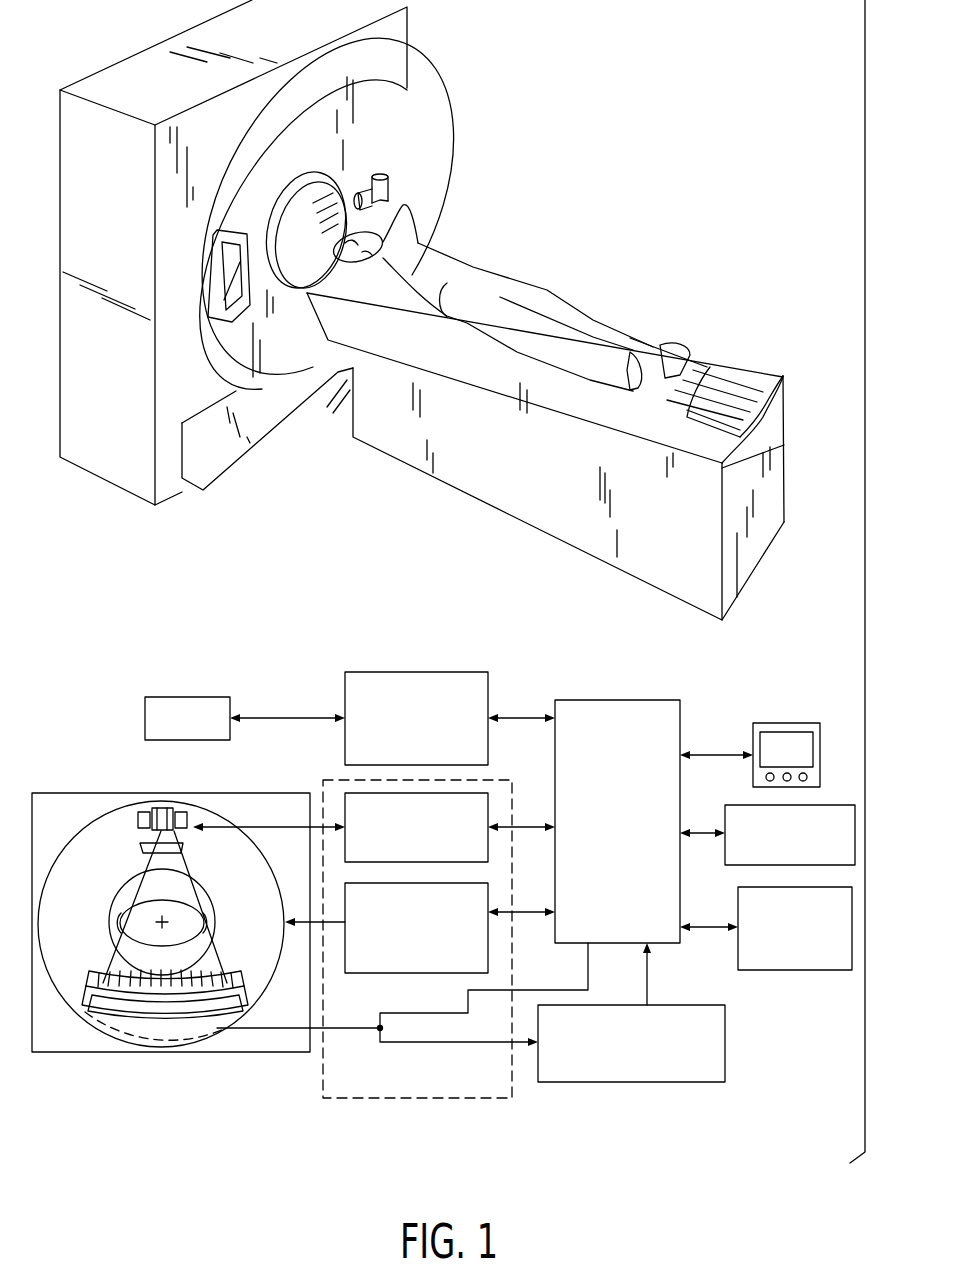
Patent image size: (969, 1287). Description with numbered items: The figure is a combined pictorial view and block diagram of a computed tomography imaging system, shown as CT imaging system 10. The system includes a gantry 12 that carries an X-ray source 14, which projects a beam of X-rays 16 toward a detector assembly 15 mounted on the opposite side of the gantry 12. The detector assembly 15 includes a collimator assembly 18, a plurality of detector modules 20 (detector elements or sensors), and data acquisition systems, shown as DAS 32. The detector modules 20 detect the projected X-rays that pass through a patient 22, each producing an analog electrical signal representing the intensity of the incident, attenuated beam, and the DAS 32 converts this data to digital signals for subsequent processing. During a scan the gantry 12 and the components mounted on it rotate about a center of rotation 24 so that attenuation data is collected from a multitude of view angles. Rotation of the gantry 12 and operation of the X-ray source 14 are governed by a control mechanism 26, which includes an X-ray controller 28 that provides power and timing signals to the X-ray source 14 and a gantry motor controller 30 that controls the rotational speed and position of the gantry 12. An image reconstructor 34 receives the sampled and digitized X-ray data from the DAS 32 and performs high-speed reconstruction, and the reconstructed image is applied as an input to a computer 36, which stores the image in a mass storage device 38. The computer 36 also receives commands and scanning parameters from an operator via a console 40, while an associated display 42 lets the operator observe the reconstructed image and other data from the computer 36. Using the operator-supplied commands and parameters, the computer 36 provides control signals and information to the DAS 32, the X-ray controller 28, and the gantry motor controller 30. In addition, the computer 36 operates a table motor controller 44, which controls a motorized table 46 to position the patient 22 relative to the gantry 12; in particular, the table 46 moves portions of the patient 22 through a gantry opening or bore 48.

The CT imaging system 10 is at (521, 124).
The gantry 12 is at (398, 141).
The X-ray source 14 is at (390, 191).
The detector assembly 15 is at (72, 975).
The beam of X-rays 16 is at (105, 972).
The collimator assembly 18 is at (172, 1020).
The detector modules 20 is at (200, 997).
The patient 22 is at (443, 265).
The center of rotation 24 is at (165, 920).
The control mechanism 26 is at (296, 1110).
The X-ray controller 28 is at (490, 806).
The gantry motor controller 30 is at (490, 942).
The data acquisition systems (DAS) 32 is at (120, 1010).
The image reconstructor 34 is at (633, 1082).
The computer 36 is at (625, 770).
The mass storage device 38 is at (768, 970).
The console 40 is at (838, 805).
The display 42 is at (787, 723).
The table motor controller 44 is at (368, 672).
The motorized table 46 is at (533, 510).
The gantry opening or bore 48 is at (291, 216).